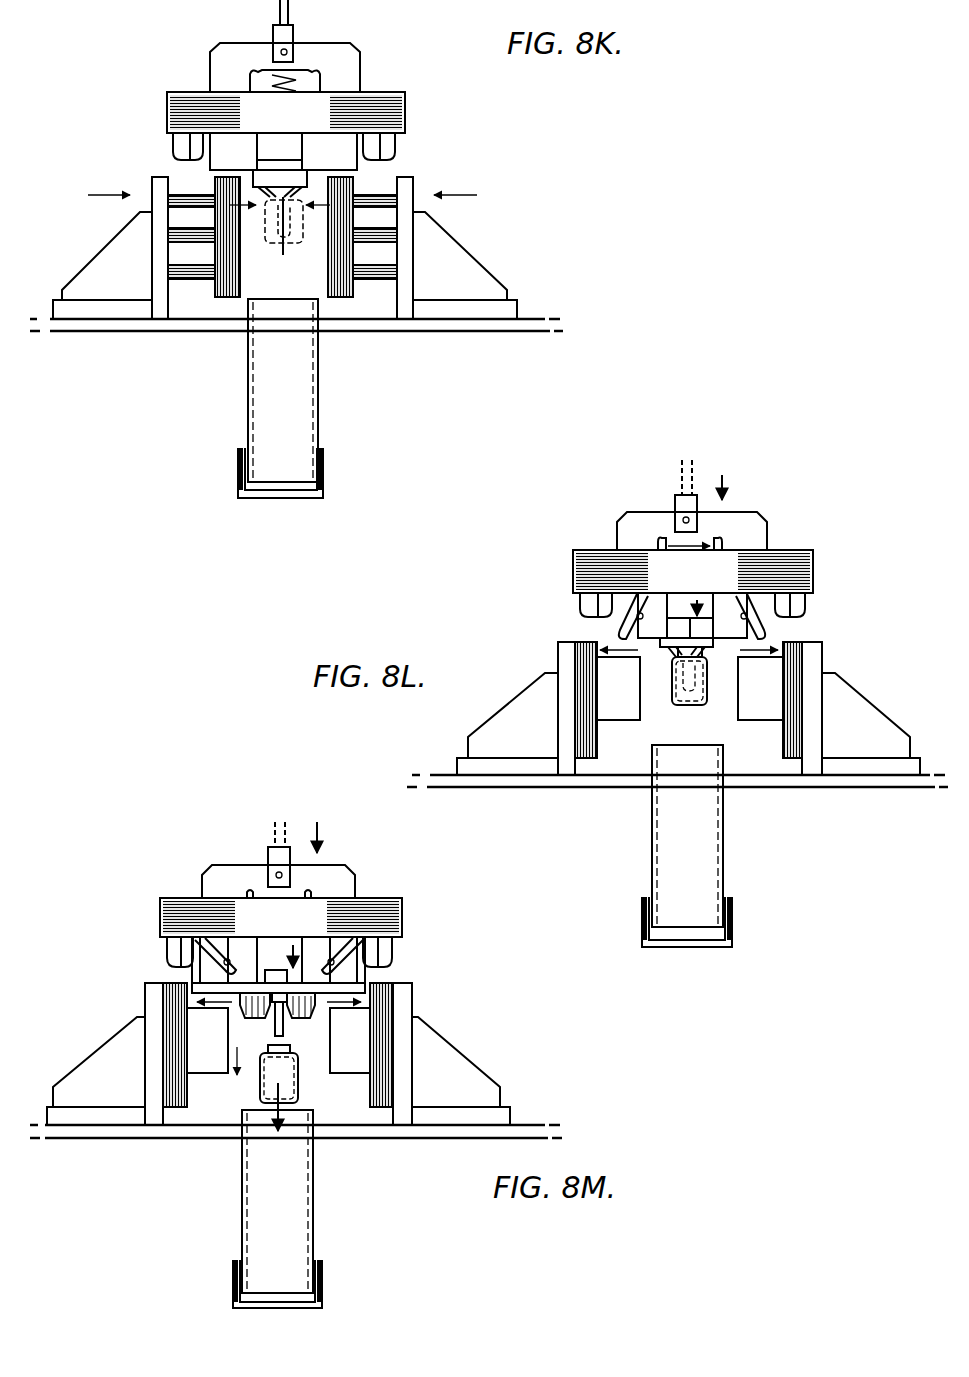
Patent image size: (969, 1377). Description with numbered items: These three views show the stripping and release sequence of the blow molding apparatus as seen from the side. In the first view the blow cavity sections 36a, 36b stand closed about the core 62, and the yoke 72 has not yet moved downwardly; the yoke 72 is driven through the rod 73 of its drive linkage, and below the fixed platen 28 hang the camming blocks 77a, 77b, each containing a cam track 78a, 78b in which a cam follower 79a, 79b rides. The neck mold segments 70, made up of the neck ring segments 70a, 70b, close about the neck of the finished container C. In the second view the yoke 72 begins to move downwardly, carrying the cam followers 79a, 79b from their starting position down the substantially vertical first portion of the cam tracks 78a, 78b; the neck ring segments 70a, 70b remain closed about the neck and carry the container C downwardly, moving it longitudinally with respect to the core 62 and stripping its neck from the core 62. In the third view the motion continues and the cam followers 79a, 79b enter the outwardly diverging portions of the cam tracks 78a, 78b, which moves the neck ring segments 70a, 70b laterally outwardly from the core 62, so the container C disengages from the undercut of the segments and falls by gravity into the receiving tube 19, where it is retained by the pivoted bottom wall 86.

In FIG. 8K, the yoke 72 is at (220, 62).
In FIG. 8L, the yoke 72 is at (743, 520).
In FIG. 8M, the yoke 72 is at (222, 882).
In FIG. 8K, the fixed platen 28 is at (405, 118).
In FIG. 8L, the fixed platen 28 is at (693, 571).
In FIG. 8M, the fixed platen 28 is at (281, 917).
In FIG. 8K, the neck mold segments 70 is at (303, 192).
In FIG. 8K, the blow split 36a is at (252, 247).
In FIG. 8L, the blow split 36a is at (620, 710).
In FIG. 8M, the blow split 36a is at (207, 1040).
In FIG. 8K, the blow split 36b is at (315, 247).
In FIG. 8L, the blow split 36b is at (763, 710).
In FIG. 8M, the blow split 36b is at (350, 1040).
In FIG. 8K, the receiving tube 19 is at (305, 395).
In FIG. 8L, the receiving tube 19 is at (723, 850).
In FIG. 8M, the receiving tube 19 is at (315, 1202).
In FIG. 8K, the swingable bottom wall 86 is at (243, 481).
In FIG. 8L, the swingable bottom wall 86 is at (732, 933).
In FIG. 8M, the swingable bottom wall 86 is at (238, 1282).
In FIG. 8L, the rod 73 is at (690, 482).
In FIG. 8M, the rod 73 is at (277, 837).
In FIG. 8L, the camming block 77a is at (625, 622).
In FIG. 8L, the camming block 77b is at (760, 625).
In FIG. 8L, the cam track 78a is at (622, 640).
In FIG. 8M, the cam track 78a is at (233, 957).
In FIG. 8L, the cam track 78b is at (762, 642).
In FIG. 8M, the cam track 78b is at (323, 963).
In FIG. 8L, the cam follower 79a is at (636, 600).
In FIG. 8M, the cam follower 79a is at (230, 980).
In FIG. 8L, the cam follower 79b is at (750, 630).
In FIG. 8M, the cam follower 79b is at (342, 980).
In FIG. 8L, the neck ring segment 70a is at (673, 663).
In FIG. 8M, the neck ring segment 70a is at (257, 1010).
In FIG. 8L, the neck ring segment 70b is at (707, 663).
In FIG. 8M, the neck ring segment 70b is at (300, 1010).
In FIG. 8M, the core 62 is at (283, 1036).
In FIG. 8L, the finished container C is at (693, 707).
In FIG. 8M, the finished container C is at (297, 1083).